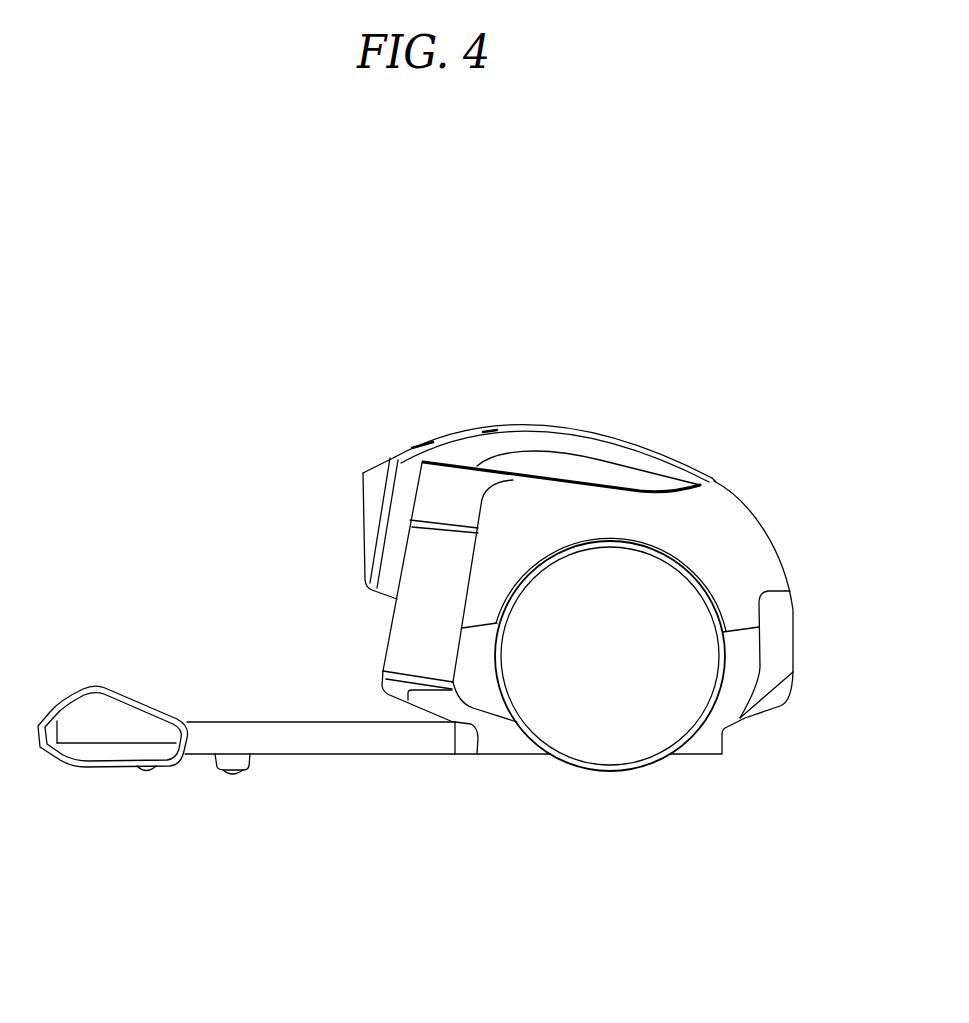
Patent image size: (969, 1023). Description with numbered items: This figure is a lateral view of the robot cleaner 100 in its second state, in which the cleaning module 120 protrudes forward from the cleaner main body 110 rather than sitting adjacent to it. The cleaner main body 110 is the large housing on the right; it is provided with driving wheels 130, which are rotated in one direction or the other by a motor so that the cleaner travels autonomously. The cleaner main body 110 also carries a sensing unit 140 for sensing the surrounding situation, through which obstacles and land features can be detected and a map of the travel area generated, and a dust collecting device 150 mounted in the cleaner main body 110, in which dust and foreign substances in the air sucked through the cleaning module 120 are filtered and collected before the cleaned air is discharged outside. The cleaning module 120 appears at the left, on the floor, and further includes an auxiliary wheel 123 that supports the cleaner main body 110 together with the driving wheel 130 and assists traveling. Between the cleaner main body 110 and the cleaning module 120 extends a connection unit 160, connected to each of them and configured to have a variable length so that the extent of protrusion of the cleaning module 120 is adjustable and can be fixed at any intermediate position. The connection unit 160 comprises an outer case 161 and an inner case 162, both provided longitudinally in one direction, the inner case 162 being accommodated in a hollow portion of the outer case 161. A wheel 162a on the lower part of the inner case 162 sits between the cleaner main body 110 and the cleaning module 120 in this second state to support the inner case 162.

The robot cleaner 100 is at (622, 422).
The cleaner main body 110 is at (733, 532).
The cleaning module 120 is at (83, 727).
The auxiliary wheel 123 is at (147, 767).
The driving wheels 130 is at (618, 722).
The sensing unit 140 is at (367, 503).
The dust collecting device 150 is at (405, 632).
The connection unit 160 is at (255, 699).
The outer case 161 is at (468, 743).
The inner case 162 is at (323, 743).
The wheel 162a is at (235, 770).